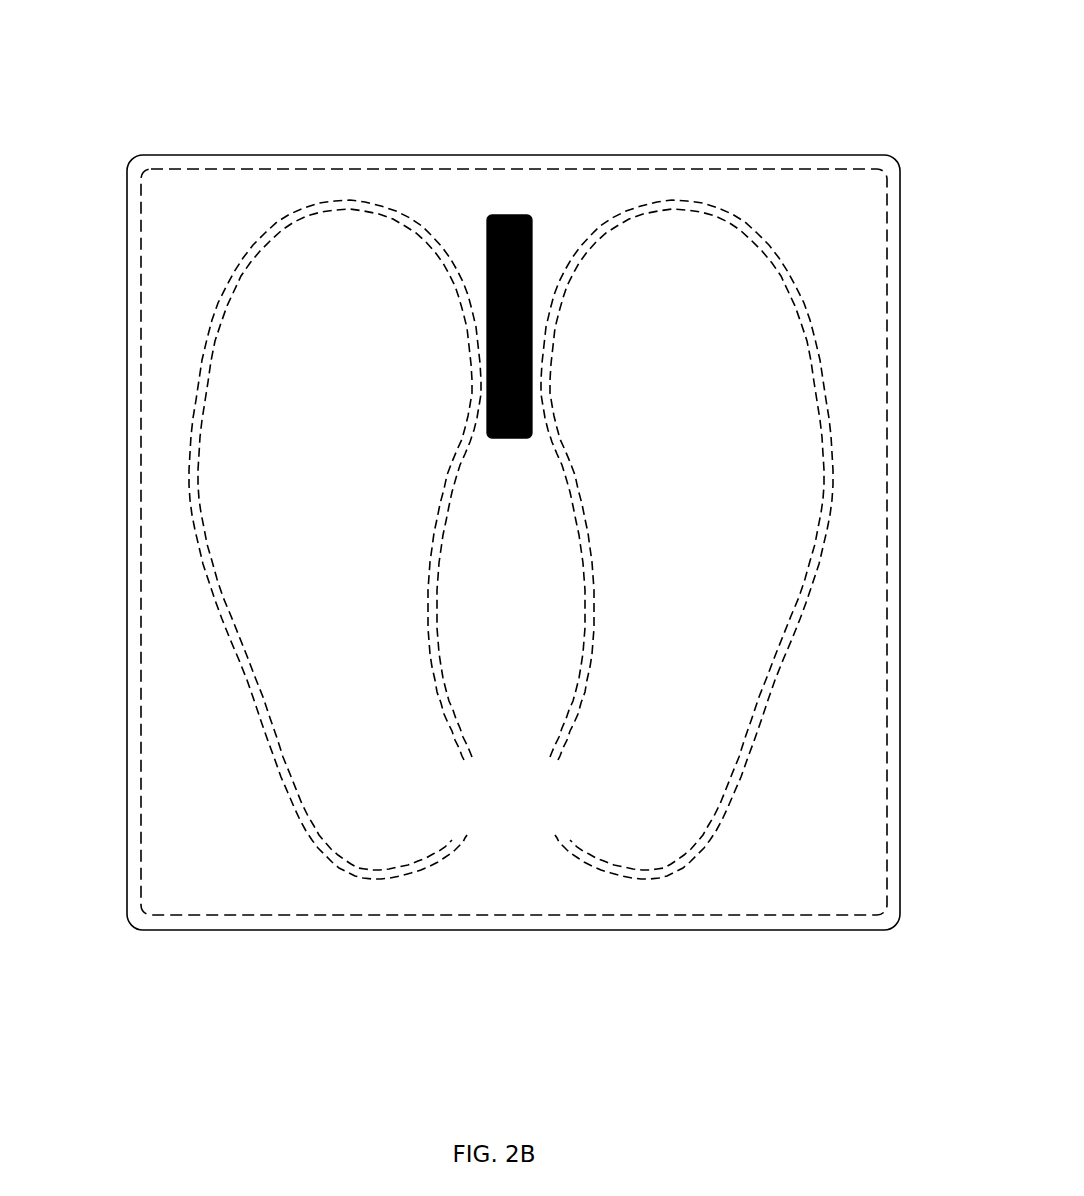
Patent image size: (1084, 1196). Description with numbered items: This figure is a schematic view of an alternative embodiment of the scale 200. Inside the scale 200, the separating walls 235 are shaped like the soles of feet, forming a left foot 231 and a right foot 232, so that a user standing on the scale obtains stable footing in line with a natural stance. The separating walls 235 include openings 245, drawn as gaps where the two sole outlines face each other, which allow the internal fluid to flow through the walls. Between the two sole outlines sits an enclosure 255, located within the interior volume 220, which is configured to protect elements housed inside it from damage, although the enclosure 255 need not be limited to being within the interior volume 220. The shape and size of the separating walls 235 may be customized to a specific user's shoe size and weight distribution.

The scale 200 is at (795, 75).
The interior volume 220 is at (848, 723).
The left foot 231 is at (260, 539).
The right foot 232 is at (687, 539).
The separating walls 235 is at (194, 465).
The openings 245 is at (465, 795).
The enclosure 255 is at (528, 212).